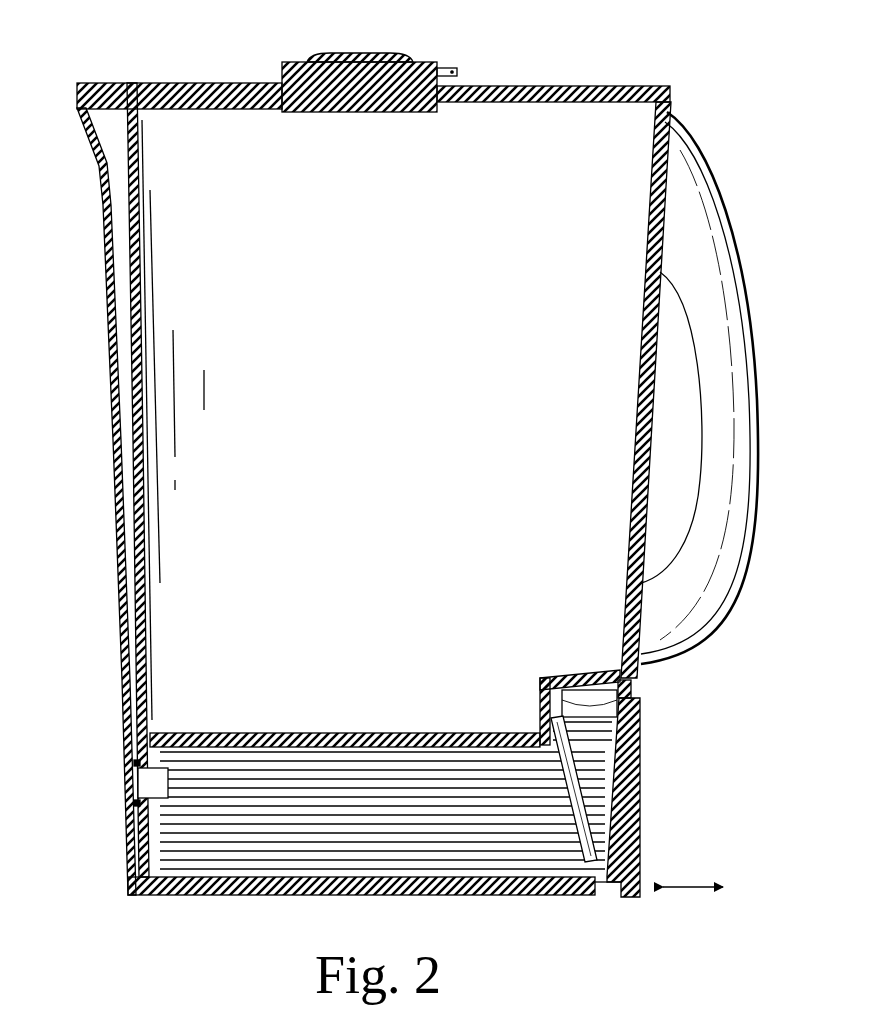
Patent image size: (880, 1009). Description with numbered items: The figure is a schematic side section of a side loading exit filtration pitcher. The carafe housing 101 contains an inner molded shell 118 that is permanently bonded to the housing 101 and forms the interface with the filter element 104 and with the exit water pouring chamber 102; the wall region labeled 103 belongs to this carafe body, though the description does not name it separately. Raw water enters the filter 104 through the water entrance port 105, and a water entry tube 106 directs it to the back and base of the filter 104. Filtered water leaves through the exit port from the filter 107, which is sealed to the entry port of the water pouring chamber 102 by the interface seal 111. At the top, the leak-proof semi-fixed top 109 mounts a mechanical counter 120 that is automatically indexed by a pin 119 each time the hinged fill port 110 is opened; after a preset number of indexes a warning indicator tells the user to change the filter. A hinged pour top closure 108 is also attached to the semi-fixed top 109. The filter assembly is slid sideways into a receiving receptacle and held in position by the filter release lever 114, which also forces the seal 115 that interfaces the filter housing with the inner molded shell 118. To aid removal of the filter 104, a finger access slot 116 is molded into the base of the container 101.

The carafe housing 101 is at (667, 170).
The exit water pouring chamber 102 is at (123, 392).
The pitcher body rear wall 103 is at (617, 238).
The filter element 104 is at (603, 807).
The water entrance port 105 is at (602, 712).
The water entry tube 106 is at (600, 778).
The exit port from the filter 107 is at (132, 783).
The hinged pour top closure 108 is at (117, 90).
The leak-proof semi-fixed top 109 is at (238, 105).
The hinged fill port 110 is at (625, 97).
The interface seal 111 is at (135, 765).
The filter release lever 114 is at (640, 664).
The seal 115 is at (532, 702).
The finger access slot 116 is at (606, 896).
The inner molded shell 118 is at (647, 353).
The pin 119 is at (455, 72).
The mechanical counter 120 is at (373, 56).